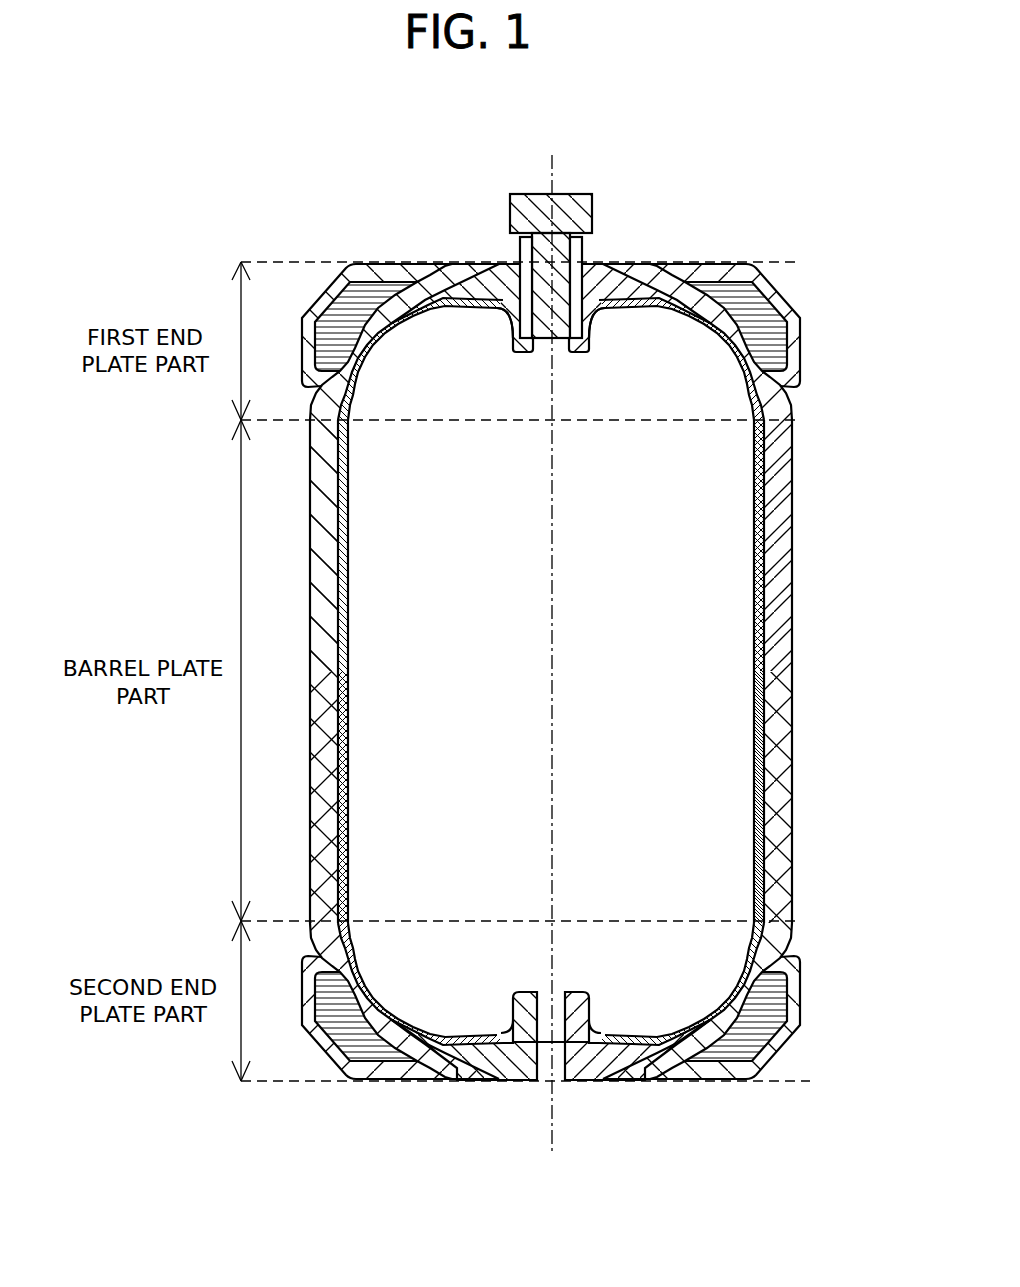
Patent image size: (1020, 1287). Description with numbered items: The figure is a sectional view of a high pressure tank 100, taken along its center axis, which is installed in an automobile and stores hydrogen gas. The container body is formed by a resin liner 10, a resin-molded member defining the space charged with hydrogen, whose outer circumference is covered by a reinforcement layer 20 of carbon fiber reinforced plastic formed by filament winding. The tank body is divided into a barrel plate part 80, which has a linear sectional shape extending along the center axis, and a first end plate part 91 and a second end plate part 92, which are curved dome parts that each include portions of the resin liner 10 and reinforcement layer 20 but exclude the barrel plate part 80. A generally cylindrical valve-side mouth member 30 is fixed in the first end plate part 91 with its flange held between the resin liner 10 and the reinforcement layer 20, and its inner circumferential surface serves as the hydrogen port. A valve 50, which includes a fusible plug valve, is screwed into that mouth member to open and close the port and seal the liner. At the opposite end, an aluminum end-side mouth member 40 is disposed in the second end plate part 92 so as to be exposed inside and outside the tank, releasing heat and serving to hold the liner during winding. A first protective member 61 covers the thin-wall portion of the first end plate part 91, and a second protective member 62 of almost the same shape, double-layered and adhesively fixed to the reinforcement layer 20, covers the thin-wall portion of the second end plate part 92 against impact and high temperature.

The resin liner 10 is at (760, 700).
The reinforcement layer 20 is at (773, 640).
The valve-side mouth member 30 is at (497, 263).
The end-side mouth member 40 is at (555, 1082).
The valve 50 is at (592, 209).
The first protective member 61 is at (328, 292).
The second protective member 62 is at (317, 1048).
The barrel plate part 80 is at (310, 680).
The first end plate part 91 is at (463, 356).
The second end plate part 92 is at (463, 1001).
The high pressure tank 100 is at (757, 172).